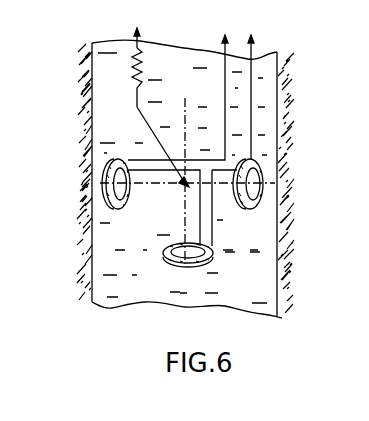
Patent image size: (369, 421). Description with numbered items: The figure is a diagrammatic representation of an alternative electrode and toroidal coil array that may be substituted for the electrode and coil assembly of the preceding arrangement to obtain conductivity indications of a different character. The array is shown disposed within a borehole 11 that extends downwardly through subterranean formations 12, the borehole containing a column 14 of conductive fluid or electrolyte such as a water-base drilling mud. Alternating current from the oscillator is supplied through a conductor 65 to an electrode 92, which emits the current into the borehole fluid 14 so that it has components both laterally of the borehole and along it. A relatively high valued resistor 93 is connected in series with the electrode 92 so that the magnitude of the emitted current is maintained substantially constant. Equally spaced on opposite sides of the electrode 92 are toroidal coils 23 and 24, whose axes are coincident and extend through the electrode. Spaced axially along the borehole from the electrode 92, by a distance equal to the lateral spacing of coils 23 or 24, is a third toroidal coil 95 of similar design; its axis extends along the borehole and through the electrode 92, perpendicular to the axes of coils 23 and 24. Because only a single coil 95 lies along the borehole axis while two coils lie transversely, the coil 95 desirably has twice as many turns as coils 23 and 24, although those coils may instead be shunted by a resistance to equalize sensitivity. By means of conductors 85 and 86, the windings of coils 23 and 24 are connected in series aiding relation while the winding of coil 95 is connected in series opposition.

The borehole 11 is at (92, 137).
The subterranean formations 12 is at (59, 134).
The column of conductive fluid 14 is at (254, 291).
The toroidal coil 23 is at (128, 205).
The toroidal coil 24 is at (258, 207).
The conductor 65 is at (137, 90).
The conductor 85 is at (225, 98).
The conductor 86 is at (251, 60).
The electrode 92 is at (181, 188).
The resistor 93 is at (143, 58).
The third toroidal coil 95 is at (176, 270).